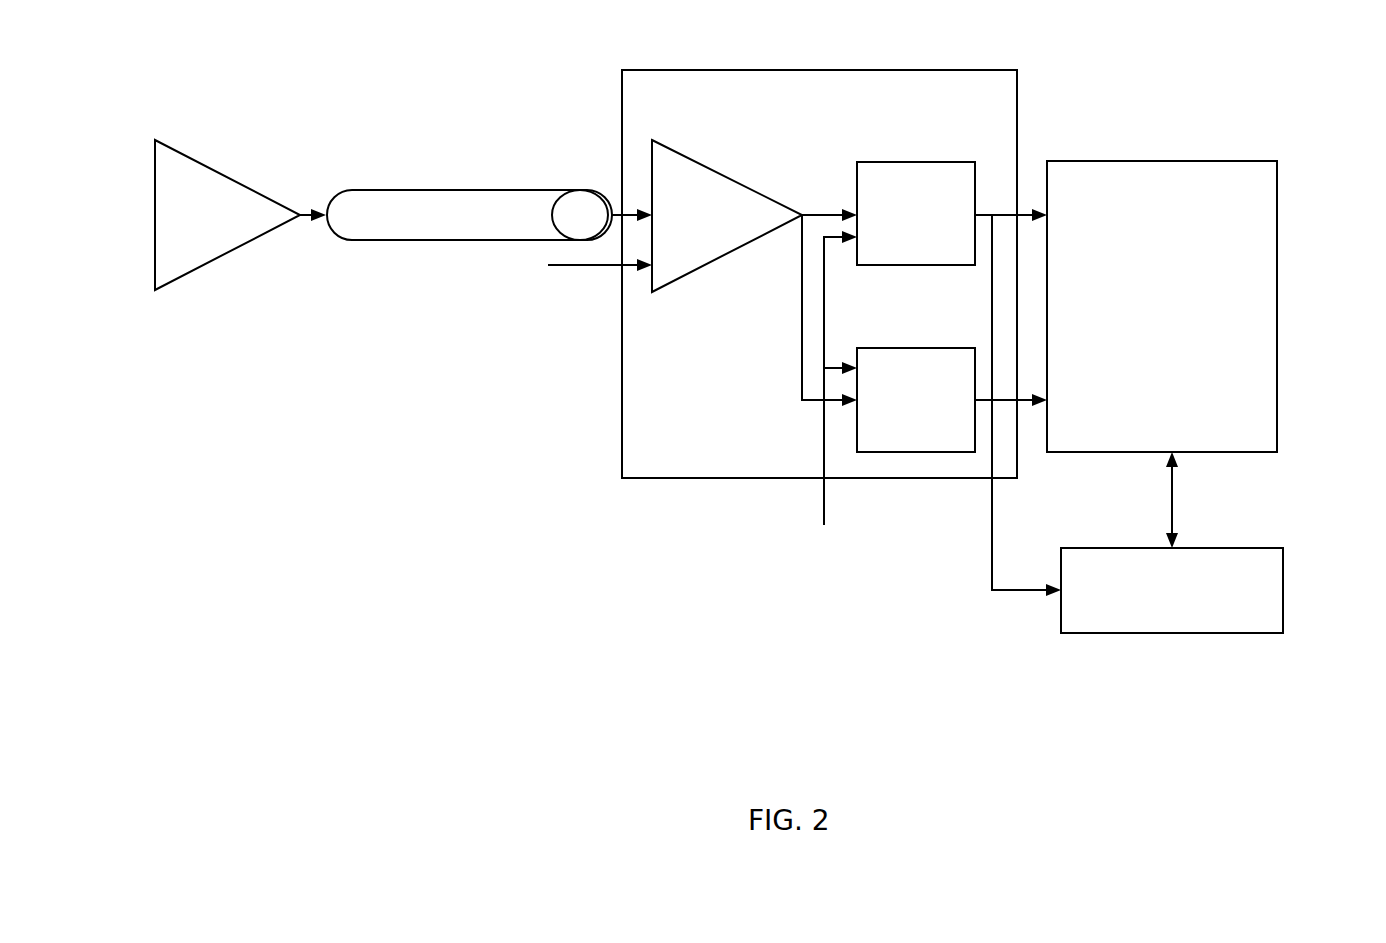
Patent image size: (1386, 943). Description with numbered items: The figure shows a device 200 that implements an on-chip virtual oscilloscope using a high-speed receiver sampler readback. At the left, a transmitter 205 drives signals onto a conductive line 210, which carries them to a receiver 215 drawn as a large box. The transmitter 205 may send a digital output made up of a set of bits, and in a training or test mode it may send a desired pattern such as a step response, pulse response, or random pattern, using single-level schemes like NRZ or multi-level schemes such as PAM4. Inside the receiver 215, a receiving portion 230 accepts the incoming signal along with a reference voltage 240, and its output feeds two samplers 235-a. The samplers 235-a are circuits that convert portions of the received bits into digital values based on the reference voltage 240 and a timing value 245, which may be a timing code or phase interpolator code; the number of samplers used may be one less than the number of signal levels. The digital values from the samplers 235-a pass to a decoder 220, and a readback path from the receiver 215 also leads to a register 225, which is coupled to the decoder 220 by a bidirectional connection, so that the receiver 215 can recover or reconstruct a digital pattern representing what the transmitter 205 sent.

The device 200 is at (1270, 722).
The transmitter 205 is at (155, 140).
The conductive line 210 is at (445, 190).
The receiver 215 is at (852, 70).
The decoder 220 is at (1190, 161).
The register 225 is at (1258, 548).
The receiving portion 230 is at (792, 210).
The sampler 235-a is at (917, 162).
The reference voltage 240 is at (548, 267).
The timing value 245 is at (824, 525).